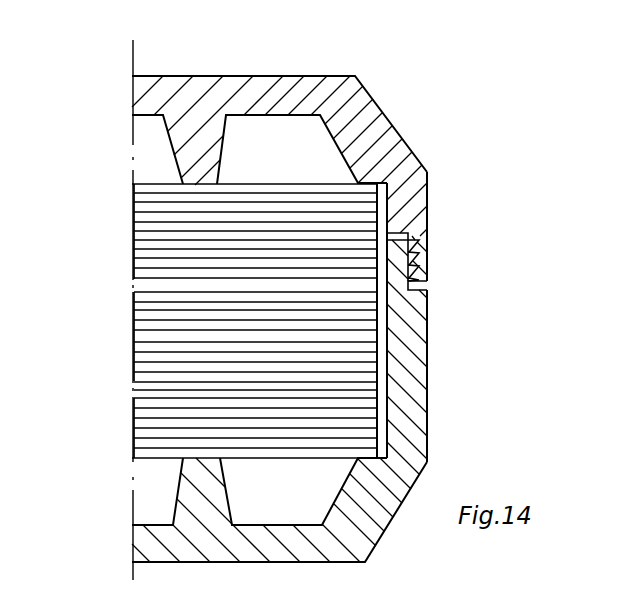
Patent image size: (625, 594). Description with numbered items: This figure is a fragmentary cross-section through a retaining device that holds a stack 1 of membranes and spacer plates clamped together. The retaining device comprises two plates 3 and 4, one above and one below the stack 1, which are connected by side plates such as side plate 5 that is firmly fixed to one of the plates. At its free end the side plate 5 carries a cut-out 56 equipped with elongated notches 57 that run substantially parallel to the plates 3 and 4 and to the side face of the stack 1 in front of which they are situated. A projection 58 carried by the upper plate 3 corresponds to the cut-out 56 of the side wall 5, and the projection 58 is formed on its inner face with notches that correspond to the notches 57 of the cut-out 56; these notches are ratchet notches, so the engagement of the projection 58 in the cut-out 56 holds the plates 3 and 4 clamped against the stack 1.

The stack 1 is at (153, 317).
The plate 3 is at (172, 98).
The plate 4 is at (198, 545).
The side plate 5 is at (408, 353).
The cut-out 56 is at (415, 290).
The elongated notch 57 is at (412, 263).
The projection 58 is at (426, 243).